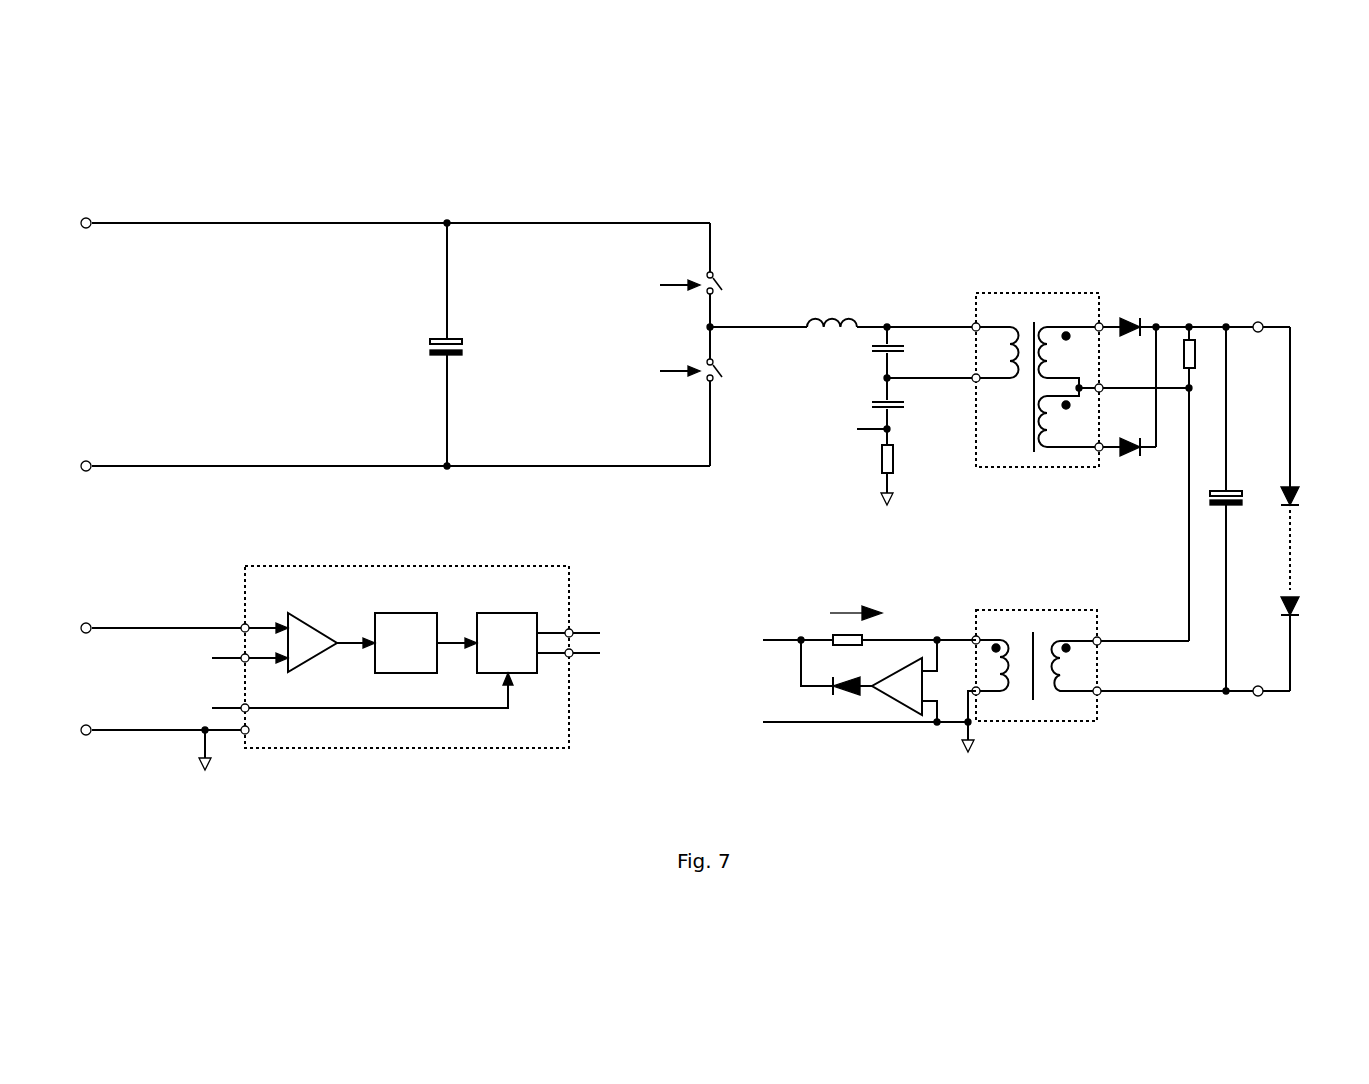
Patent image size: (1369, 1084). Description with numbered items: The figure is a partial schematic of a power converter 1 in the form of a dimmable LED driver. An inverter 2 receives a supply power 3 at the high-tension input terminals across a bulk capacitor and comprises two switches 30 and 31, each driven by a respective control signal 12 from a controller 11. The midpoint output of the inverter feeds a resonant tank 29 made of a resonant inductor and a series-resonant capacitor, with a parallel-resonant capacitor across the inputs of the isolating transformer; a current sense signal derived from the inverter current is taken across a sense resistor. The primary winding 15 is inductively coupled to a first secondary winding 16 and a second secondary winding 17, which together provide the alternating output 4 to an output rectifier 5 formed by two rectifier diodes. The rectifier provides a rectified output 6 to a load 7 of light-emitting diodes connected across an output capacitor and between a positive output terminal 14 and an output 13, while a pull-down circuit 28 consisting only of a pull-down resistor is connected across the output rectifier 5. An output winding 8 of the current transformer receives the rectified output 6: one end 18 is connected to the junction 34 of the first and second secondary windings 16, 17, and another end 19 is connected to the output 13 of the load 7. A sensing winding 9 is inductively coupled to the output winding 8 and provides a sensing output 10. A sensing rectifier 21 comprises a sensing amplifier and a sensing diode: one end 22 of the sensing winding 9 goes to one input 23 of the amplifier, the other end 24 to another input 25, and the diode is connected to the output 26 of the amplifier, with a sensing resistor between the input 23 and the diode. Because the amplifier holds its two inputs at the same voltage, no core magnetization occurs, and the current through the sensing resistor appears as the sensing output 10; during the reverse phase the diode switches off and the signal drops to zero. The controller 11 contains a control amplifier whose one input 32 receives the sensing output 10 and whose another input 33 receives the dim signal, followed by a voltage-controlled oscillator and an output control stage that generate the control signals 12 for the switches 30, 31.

The power converter 1 is at (1180, 210).
The inverter 2 is at (735, 234).
The supply power 3 is at (268, 205).
The alternating output 4 is at (1108, 300).
The output rectifier 5 is at (1143, 300).
The rectified output 6 is at (1160, 318).
The load 7 is at (1292, 485).
The output winding 8 is at (1065, 700).
The sensing winding 9 is at (1005, 697).
The sensing output 10 is at (770, 615).
The controller 11 is at (470, 752).
The control signal 12 is at (618, 295).
The output 13 is at (1260, 697).
The output terminal (positive) 14 is at (1260, 322).
The primary winding 15 is at (1003, 322).
The first secondary winding 16 is at (1072, 322).
The second secondary winding 17 is at (1062, 448).
The one end of the output winding 18 is at (1100, 645).
The another end of the output winding 19 is at (1100, 695).
The sensing rectifier 21 is at (910, 610).
The one end of the sensing winding 22 is at (980, 636).
The one input of the sensing amplifier 23 is at (930, 668).
The another end of the sensing winding 24 is at (978, 697).
The another input of the sensing amplifier 25 is at (933, 725).
The output of the sensing amplifier 26 is at (840, 684).
The pull-down circuit 28 is at (1198, 375).
The resonant tank 29 is at (875, 300).
The switch 30 is at (745, 284).
The switch 31 is at (756, 382).
The one input of the control amplifier 32 is at (262, 663).
The another input of the control amplifier 33 is at (268, 625).
The junction 34 is at (1082, 386).